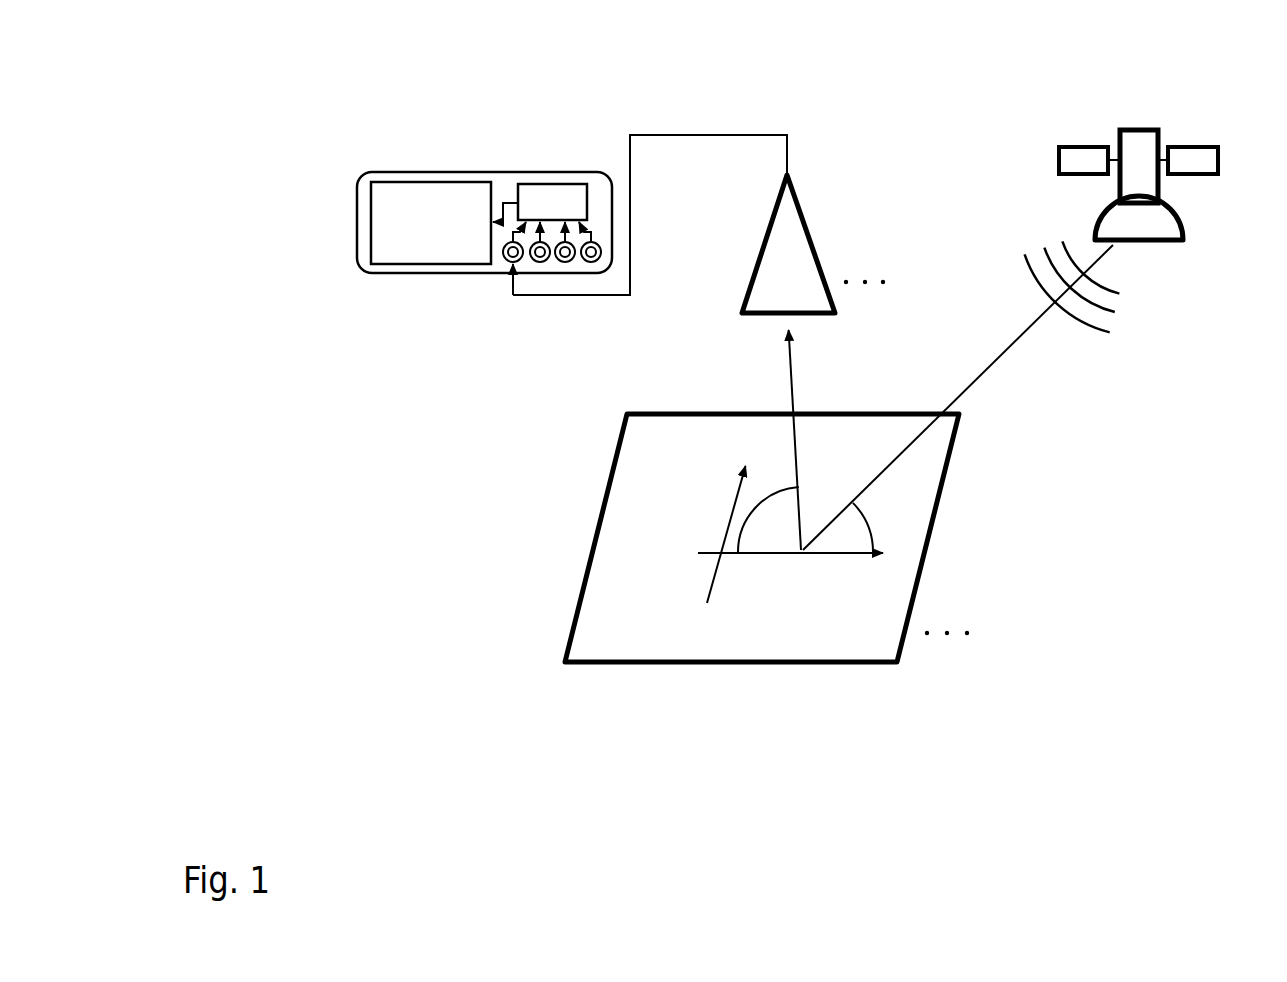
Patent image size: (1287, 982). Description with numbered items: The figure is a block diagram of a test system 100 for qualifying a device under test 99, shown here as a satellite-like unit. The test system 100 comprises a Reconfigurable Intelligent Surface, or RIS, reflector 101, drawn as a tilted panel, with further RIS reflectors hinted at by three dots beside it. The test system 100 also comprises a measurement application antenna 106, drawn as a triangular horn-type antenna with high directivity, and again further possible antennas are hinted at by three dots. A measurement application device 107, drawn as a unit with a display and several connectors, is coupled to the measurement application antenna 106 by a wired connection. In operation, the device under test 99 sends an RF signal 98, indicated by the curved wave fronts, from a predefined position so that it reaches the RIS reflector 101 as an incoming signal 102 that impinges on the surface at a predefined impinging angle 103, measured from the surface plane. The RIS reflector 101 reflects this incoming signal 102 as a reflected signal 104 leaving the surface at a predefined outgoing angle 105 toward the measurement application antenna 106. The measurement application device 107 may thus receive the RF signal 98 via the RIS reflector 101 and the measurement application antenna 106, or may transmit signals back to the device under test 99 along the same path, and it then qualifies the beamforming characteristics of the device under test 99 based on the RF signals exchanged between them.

The test system 100 is at (384, 757).
The Reconfigurable Intelligent Surface reflector 101 is at (597, 528).
The incoming signal 102 is at (955, 393).
The impinging angle 103 is at (858, 522).
The reflected signal 104 is at (788, 370).
The outgoing angle 105 is at (758, 510).
The measurement application antenna 106 is at (797, 190).
The measurement application device 107 is at (477, 173).
The RF signal 98 is at (1042, 247).
The device under test 99 is at (1123, 128).